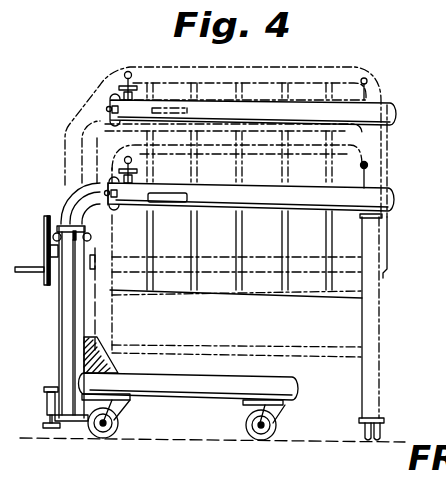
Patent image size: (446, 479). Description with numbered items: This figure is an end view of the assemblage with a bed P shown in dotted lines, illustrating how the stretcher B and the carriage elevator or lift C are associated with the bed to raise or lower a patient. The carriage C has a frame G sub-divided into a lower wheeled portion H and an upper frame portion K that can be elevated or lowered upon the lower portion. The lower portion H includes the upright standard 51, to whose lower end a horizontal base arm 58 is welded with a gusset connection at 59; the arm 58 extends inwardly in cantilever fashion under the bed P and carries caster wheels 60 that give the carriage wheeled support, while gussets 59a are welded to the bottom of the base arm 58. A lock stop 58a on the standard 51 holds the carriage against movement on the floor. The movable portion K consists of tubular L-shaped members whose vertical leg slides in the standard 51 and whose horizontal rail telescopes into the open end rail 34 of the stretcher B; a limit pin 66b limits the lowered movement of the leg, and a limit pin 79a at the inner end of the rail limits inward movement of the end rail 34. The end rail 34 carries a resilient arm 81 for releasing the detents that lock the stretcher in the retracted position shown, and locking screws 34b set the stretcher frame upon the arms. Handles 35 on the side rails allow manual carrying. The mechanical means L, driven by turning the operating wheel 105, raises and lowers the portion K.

The litter or stretcher B is at (347, 203).
The end rail 34 is at (266, 193).
The locking screw 34b is at (137, 183).
The loop or handle 35 is at (370, 171).
The resilient arm 81 is at (176, 193).
The bed P is at (384, 295).
The upper frame portion K is at (77, 200).
The limit pin 79a is at (103, 183).
The limit pin 66b is at (60, 223).
The mechanical means L is at (45, 252).
The operating wheel 105 is at (43, 281).
The carriage elevator or lift C is at (57, 324).
The standard 51 is at (62, 345).
The frame G is at (58, 368).
The lock stop 58a is at (47, 410).
The gusset 59 is at (100, 360).
The gusset 59a is at (100, 402).
The horizontal base arm 58 is at (250, 391).
The lower wheeled portion H is at (181, 387).
The caster wheel 60 is at (118, 428).